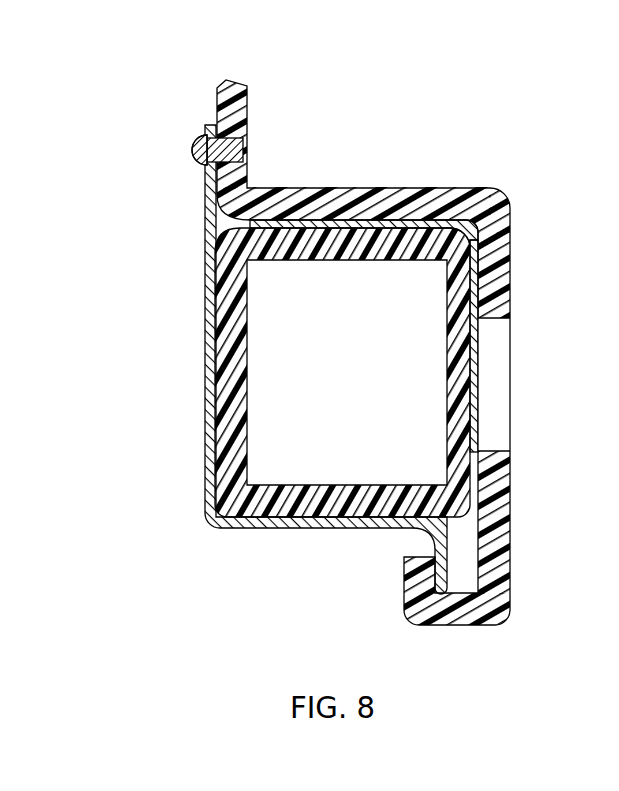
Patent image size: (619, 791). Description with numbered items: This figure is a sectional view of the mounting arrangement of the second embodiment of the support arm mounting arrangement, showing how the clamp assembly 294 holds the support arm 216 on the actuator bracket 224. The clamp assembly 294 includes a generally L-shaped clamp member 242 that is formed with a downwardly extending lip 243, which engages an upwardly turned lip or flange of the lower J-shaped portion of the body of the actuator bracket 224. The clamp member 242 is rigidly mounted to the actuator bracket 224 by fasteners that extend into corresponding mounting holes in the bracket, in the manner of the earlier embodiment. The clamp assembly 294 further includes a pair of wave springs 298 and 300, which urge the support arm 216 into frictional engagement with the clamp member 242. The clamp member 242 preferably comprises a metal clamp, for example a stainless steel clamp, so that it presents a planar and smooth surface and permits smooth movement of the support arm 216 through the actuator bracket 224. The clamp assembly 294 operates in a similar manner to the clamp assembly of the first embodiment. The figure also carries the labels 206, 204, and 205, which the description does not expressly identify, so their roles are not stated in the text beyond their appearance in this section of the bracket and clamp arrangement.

The actuator bracket 224 is at (272, 102).
The top wall of frame member 206 is at (288, 188).
The wave spring 300 is at (387, 218).
The support arm 216 is at (498, 190).
The side wall of frame member 204 is at (505, 251).
The wave spring 298 is at (481, 356).
The clamp member 242 is at (188, 331).
The downwardly extending lip 243 is at (452, 527).
The clamp assembly 294 is at (191, 544).
The hook flange of frame member 205 is at (403, 562).